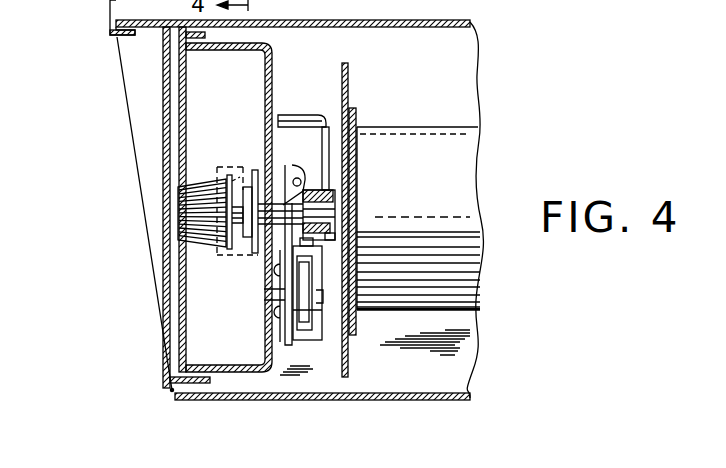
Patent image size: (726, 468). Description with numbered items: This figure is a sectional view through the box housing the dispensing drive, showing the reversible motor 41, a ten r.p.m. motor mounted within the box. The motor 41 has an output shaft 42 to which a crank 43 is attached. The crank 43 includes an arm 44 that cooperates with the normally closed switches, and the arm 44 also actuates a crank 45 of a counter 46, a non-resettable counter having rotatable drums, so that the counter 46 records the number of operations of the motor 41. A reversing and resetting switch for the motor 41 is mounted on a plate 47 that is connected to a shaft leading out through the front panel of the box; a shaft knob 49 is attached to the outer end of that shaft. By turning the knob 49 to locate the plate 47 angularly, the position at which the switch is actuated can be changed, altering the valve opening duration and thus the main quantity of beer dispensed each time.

The reversible motor 41 is at (414, 135).
The output shaft 42 is at (335, 207).
The crank 43 is at (326, 165).
The arm 44 is at (295, 115).
The crank of counter 45 is at (309, 145).
The counter 46 is at (240, 168).
The plate 47 is at (286, 345).
The shaft knob 49 is at (182, 219).